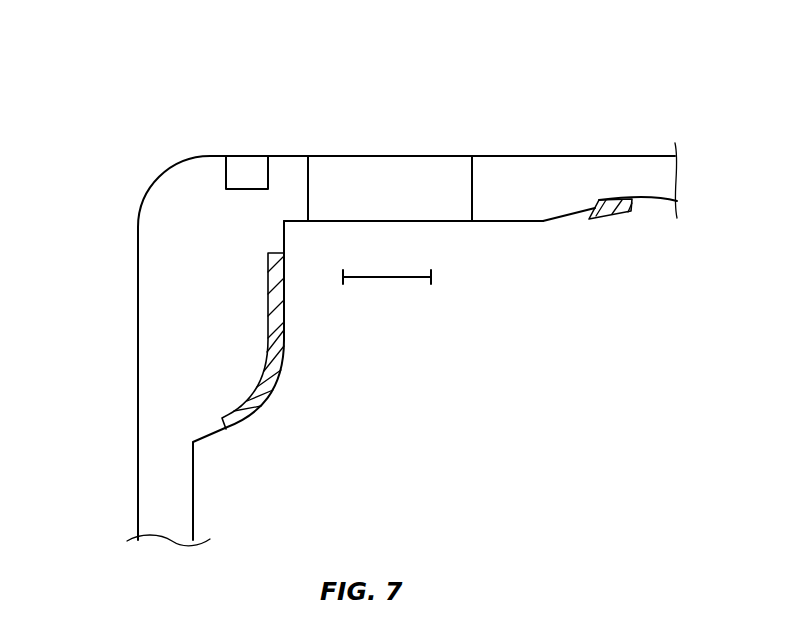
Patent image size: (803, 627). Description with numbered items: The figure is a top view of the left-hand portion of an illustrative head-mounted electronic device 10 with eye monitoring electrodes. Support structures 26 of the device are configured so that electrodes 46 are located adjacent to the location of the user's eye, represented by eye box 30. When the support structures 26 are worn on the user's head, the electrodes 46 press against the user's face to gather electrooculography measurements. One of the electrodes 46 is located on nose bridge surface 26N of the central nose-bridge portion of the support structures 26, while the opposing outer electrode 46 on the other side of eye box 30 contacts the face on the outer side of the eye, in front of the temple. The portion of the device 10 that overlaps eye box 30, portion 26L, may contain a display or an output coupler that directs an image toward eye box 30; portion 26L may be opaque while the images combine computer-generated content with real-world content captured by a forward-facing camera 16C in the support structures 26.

The device 10 is at (551, 58).
The camera 16C is at (248, 165).
The support structures 26 is at (110, 148).
The portion 26L is at (393, 165).
The nose bridge surface 26N is at (662, 200).
The eye box 30 is at (431, 277).
The electrodes 46 is at (284, 343).